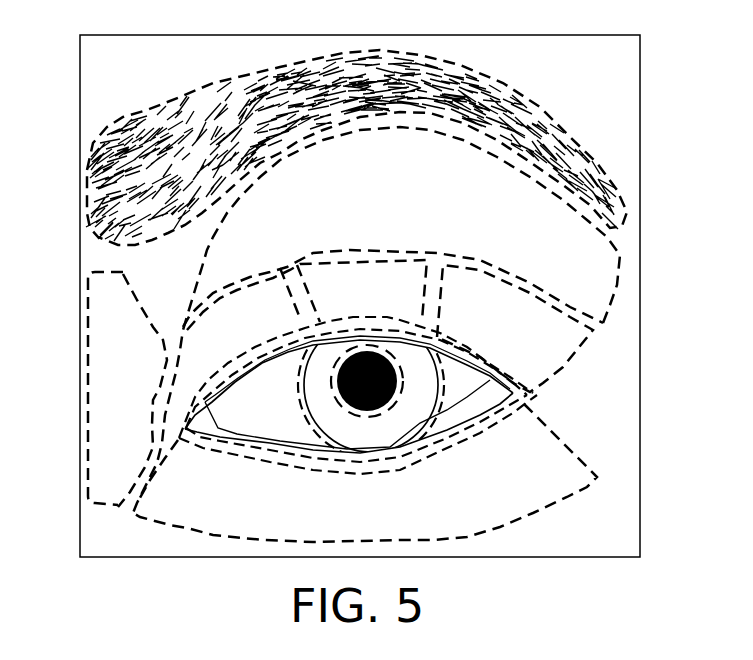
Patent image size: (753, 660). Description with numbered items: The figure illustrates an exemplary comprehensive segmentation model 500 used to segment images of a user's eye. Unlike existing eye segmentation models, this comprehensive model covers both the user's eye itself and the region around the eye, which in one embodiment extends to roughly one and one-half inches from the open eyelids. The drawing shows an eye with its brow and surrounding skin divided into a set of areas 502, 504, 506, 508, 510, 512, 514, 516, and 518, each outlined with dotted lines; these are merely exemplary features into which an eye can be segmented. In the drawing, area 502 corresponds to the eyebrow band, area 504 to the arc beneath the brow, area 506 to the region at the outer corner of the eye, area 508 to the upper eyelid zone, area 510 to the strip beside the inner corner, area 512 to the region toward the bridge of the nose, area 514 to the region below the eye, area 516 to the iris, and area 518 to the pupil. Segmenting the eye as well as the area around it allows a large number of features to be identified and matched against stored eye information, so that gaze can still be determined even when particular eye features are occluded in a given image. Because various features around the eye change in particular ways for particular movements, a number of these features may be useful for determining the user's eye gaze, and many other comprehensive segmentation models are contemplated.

The comprehensive segmentation model 500 is at (686, 68).
The area 502 is at (513, 88).
The area 504 is at (200, 271).
The area 506 is at (568, 367).
The area 508 is at (355, 262).
The area 510 is at (183, 350).
The area 512 is at (88, 347).
The area 514 is at (553, 422).
The area 516 is at (300, 421).
The area 518 is at (336, 381).